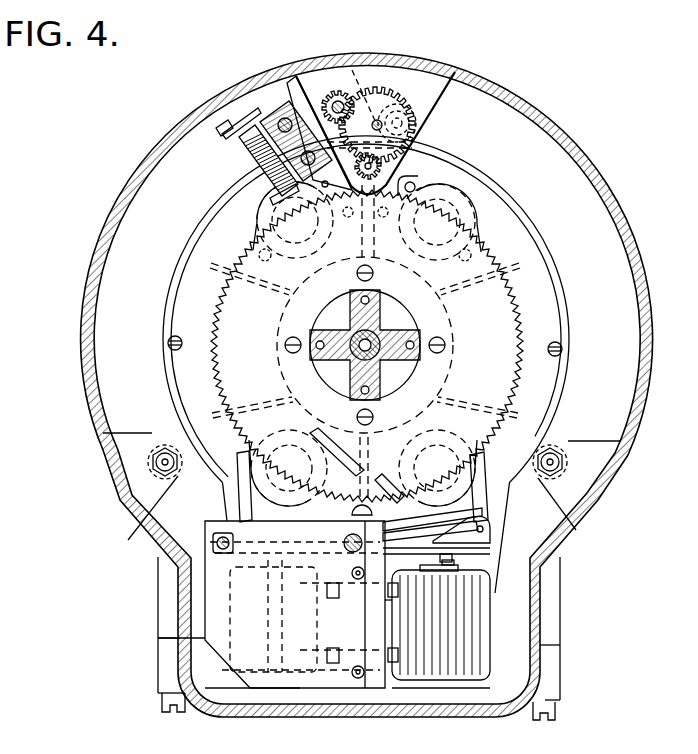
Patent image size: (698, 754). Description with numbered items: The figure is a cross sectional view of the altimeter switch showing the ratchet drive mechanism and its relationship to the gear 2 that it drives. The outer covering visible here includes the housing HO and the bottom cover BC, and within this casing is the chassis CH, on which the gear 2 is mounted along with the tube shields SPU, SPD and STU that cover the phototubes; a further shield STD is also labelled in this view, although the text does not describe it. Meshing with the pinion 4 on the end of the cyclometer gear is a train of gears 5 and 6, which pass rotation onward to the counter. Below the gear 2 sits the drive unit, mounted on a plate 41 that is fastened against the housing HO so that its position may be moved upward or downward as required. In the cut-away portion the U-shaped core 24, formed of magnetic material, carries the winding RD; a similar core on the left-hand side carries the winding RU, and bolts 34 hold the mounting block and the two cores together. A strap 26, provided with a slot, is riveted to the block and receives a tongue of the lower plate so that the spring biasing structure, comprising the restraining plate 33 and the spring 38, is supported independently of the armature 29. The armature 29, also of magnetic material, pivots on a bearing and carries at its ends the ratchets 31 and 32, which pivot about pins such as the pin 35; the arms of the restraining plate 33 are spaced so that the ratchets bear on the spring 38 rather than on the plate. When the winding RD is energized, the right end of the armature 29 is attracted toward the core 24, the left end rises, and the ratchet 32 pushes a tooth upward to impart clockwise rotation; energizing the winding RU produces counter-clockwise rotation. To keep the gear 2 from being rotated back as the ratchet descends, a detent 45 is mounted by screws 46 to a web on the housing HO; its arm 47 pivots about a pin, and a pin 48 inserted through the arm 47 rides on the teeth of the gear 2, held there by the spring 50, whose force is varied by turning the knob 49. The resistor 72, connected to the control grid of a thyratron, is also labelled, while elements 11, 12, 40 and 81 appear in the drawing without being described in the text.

The gear 2 is at (513, 297).
The pinion 4 is at (383, 166).
The gear 5 is at (336, 92).
The gear 6 is at (382, 100).
The chassis plate edge 11 is at (555, 414).
The hidden gear 12 is at (412, 128).
The U-shaped core 24 is at (266, 688).
The strap 26 is at (367, 683).
The armature 29 is at (478, 552).
The ratchet 31 is at (479, 473).
The ratchet 32 is at (246, 470).
The restraining plate 33 is at (430, 534).
The bolts 34 is at (388, 618).
The pin 35 is at (484, 529).
The spring 38 is at (432, 518).
The cam follower 40 is at (352, 515).
The plate 41 is at (222, 640).
The detent 45 is at (262, 136).
The screws 46 is at (286, 112).
The arm 47 is at (280, 197).
The pin 48 is at (295, 199).
The knob 49 is at (220, 131).
The spring 50 is at (252, 168).
The resistor 72 is at (389, 477).
The pawl arm 81 is at (316, 473).
The tube shield SPU is at (308, 220).
The tube shield SPD is at (466, 226).
The station down STD is at (288, 464).
The tube shield STU is at (438, 463).
The chassis CH is at (540, 330).
The housing HO is at (577, 518).
The winding RU is at (295, 611).
The winding RD is at (468, 678).
The bottom cover BC is at (432, 718).